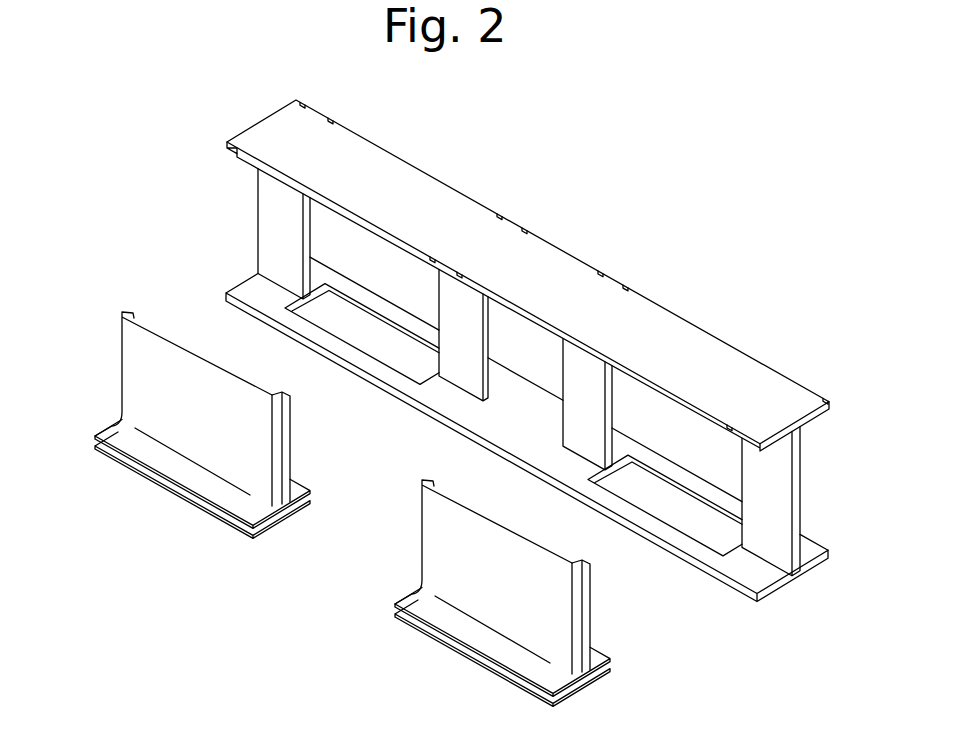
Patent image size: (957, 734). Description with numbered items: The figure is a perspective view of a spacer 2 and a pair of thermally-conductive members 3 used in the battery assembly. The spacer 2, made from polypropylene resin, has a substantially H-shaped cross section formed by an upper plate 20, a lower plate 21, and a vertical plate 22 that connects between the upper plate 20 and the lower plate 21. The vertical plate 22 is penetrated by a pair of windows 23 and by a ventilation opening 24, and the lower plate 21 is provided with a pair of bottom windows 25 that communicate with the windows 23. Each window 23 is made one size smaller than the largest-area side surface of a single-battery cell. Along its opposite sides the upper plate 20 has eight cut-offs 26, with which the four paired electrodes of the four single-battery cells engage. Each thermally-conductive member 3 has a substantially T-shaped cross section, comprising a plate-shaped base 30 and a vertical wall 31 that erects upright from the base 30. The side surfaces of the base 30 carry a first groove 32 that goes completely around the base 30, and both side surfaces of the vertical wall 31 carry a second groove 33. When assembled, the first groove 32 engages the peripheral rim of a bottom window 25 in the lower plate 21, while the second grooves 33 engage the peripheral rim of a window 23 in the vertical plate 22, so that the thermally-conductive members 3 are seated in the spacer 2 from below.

The spacer 2 is at (573, 232).
The upper plate 20 is at (693, 347).
The lower plate 21 is at (250, 290).
The vertical plate 22 is at (778, 487).
The windows 23 is at (386, 276).
The ventilation opening 24 is at (511, 366).
The bottom windows 25 is at (345, 345).
The cut-offs 26 is at (247, 153).
The base 30 is at (215, 485).
The vertical wall 31 is at (133, 375).
The first groove 32 is at (272, 522).
The second groove 33 is at (285, 425).
The thermally-conductive member 3 is at (517, 597).